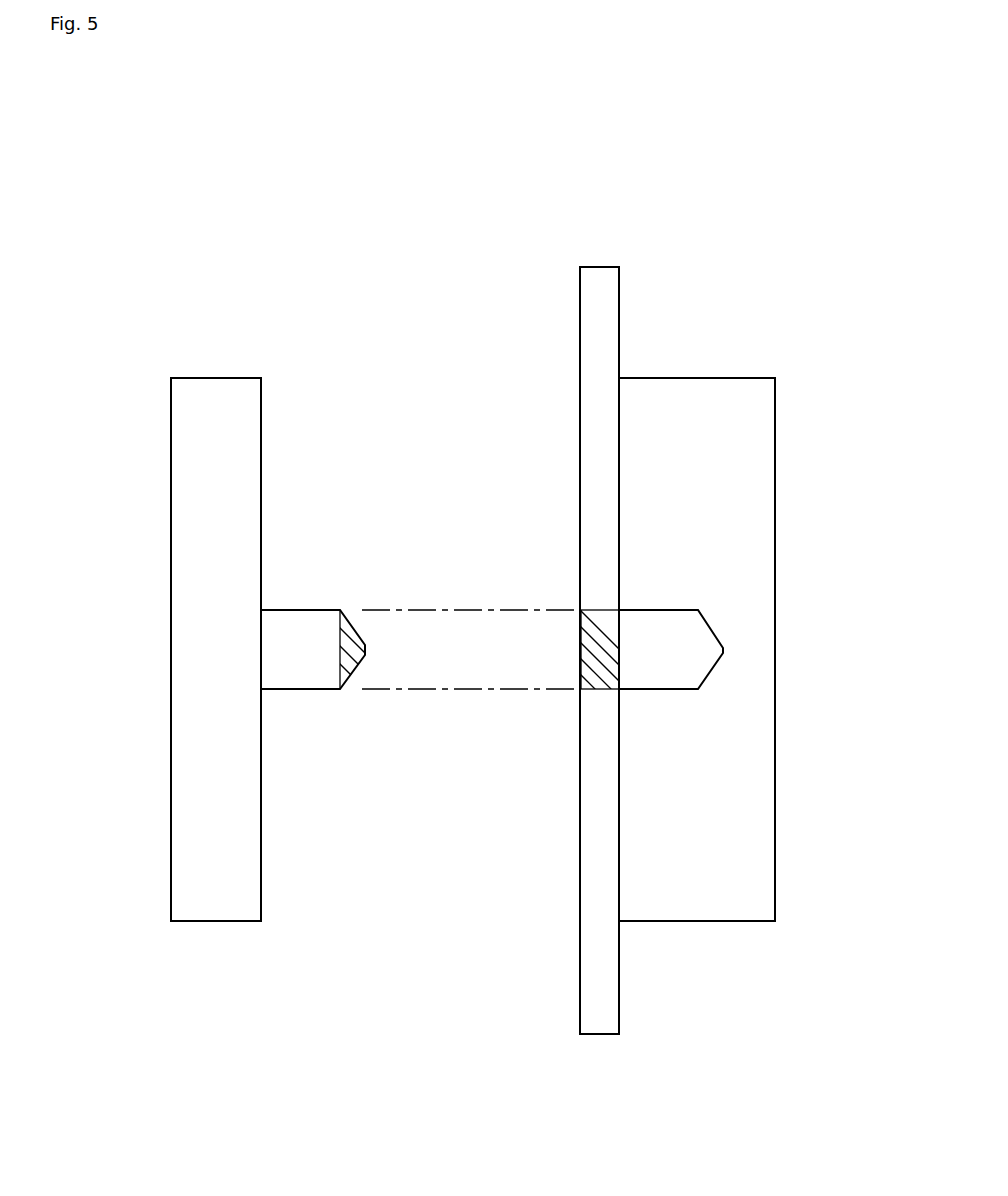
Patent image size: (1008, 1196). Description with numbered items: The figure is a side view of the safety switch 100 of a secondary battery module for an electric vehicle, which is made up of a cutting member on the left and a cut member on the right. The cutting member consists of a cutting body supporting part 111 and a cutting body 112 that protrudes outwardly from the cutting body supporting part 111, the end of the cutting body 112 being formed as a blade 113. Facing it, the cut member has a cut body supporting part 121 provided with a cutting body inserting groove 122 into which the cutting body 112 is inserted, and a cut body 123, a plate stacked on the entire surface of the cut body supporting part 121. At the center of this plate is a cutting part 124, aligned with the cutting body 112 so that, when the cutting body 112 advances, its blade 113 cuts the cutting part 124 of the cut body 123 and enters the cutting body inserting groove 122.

The safety switch 100 is at (396, 216).
The cutting body supporting part 111 is at (190, 495).
The cutting body 112 is at (288, 626).
The blade 113 is at (352, 654).
The cut body supporting part 121 is at (757, 507).
The cutting body inserting groove 122 is at (705, 637).
The cut body 123 is at (610, 316).
The cutting part 124 is at (583, 618).